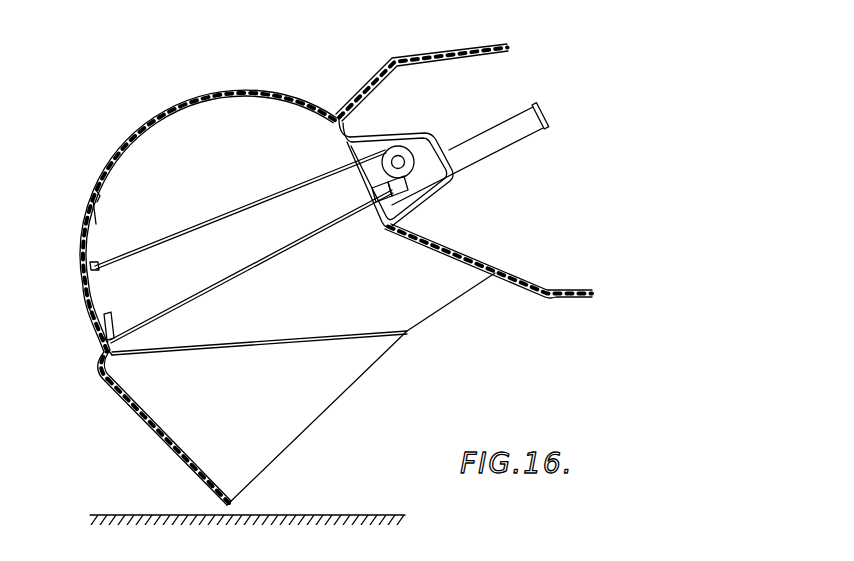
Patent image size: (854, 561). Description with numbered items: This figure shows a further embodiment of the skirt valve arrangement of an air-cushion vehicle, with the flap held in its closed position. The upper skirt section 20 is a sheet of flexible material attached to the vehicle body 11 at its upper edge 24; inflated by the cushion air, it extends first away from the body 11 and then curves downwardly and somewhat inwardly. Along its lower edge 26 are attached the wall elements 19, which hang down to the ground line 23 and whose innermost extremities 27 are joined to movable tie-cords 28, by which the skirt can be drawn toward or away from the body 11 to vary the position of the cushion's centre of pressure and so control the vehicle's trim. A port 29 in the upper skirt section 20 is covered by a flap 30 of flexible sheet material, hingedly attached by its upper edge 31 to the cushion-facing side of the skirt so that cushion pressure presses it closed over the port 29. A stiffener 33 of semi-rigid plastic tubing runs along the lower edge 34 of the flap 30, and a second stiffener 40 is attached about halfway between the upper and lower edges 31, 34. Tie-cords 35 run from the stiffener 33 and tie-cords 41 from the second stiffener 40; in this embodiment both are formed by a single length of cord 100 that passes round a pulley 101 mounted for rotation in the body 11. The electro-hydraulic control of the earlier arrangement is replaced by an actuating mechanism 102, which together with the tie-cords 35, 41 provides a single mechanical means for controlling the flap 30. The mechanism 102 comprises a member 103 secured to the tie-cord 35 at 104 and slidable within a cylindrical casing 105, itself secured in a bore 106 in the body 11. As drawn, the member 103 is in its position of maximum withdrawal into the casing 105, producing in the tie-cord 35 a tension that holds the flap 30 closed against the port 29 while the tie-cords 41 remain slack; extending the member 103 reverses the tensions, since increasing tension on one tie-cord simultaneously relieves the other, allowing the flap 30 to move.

The body 11 is at (477, 55).
The wall elements 19 is at (177, 448).
The upper skirt section 20 is at (233, 91).
The ground 23 is at (162, 513).
The upper edge 24 is at (341, 110).
The lower edge 26 is at (112, 352).
The innermost extremities 27 is at (405, 330).
The tie-cords 28 is at (448, 305).
The port 29 is at (88, 309).
The flap 30 is at (98, 222).
The upper edge 31 is at (112, 190).
The stiffener 33 is at (107, 316).
The lower edge 34 is at (98, 337).
The tie-cords 35 is at (218, 281).
The second stiffener 40 is at (90, 266).
The tie-cords 41 is at (307, 203).
The single length of cord 100 is at (335, 206).
The pulley 101 is at (402, 155).
The actuating mechanism 102 is at (526, 232).
The member 103 is at (410, 192).
The securing point 104 is at (380, 198).
The cylindrical casing 105 is at (503, 146).
The bore 106 is at (483, 163).